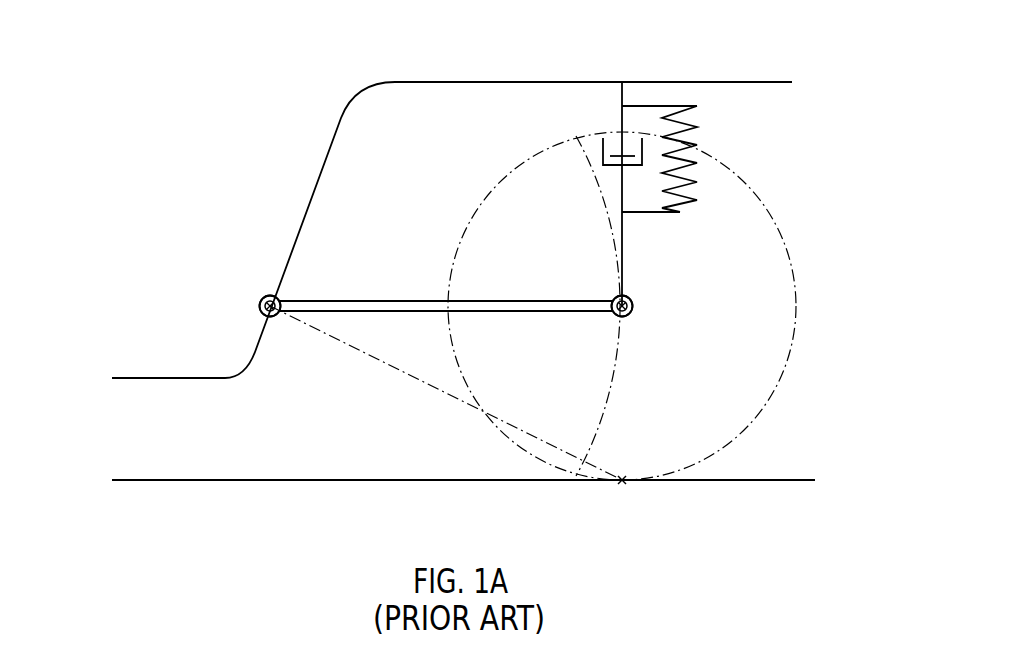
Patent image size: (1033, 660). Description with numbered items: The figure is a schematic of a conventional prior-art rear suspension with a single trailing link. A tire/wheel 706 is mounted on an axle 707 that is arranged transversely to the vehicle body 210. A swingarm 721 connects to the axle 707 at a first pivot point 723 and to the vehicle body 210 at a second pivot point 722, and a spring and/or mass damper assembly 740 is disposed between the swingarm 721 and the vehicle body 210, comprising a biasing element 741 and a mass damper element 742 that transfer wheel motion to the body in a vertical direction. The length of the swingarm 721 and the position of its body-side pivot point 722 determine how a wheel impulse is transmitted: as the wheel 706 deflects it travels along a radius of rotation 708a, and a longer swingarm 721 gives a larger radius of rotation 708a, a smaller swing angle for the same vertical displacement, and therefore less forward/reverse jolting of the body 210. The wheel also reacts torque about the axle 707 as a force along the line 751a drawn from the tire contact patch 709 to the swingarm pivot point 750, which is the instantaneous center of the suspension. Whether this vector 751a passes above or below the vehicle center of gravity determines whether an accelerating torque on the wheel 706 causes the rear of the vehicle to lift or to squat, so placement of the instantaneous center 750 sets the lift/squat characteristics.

The vehicle body 210 is at (302, 222).
The spring and/or mass damper assembly 740 is at (652, 162).
The biasing element 741 is at (698, 127).
The mass damper element 742 is at (602, 150).
The swingarm 721 is at (434, 306).
The second pivot point 722 is at (263, 303).
The swingarm pivot point (instantaneous center) 750 is at (263, 303).
The first pivot point 723 is at (628, 303).
The axle 707 is at (628, 303).
The tire/wheel 706 is at (717, 452).
The radius of rotation 708a is at (612, 385).
The line (force vector) 751a is at (395, 368).
The tire contact patch 709 is at (622, 480).